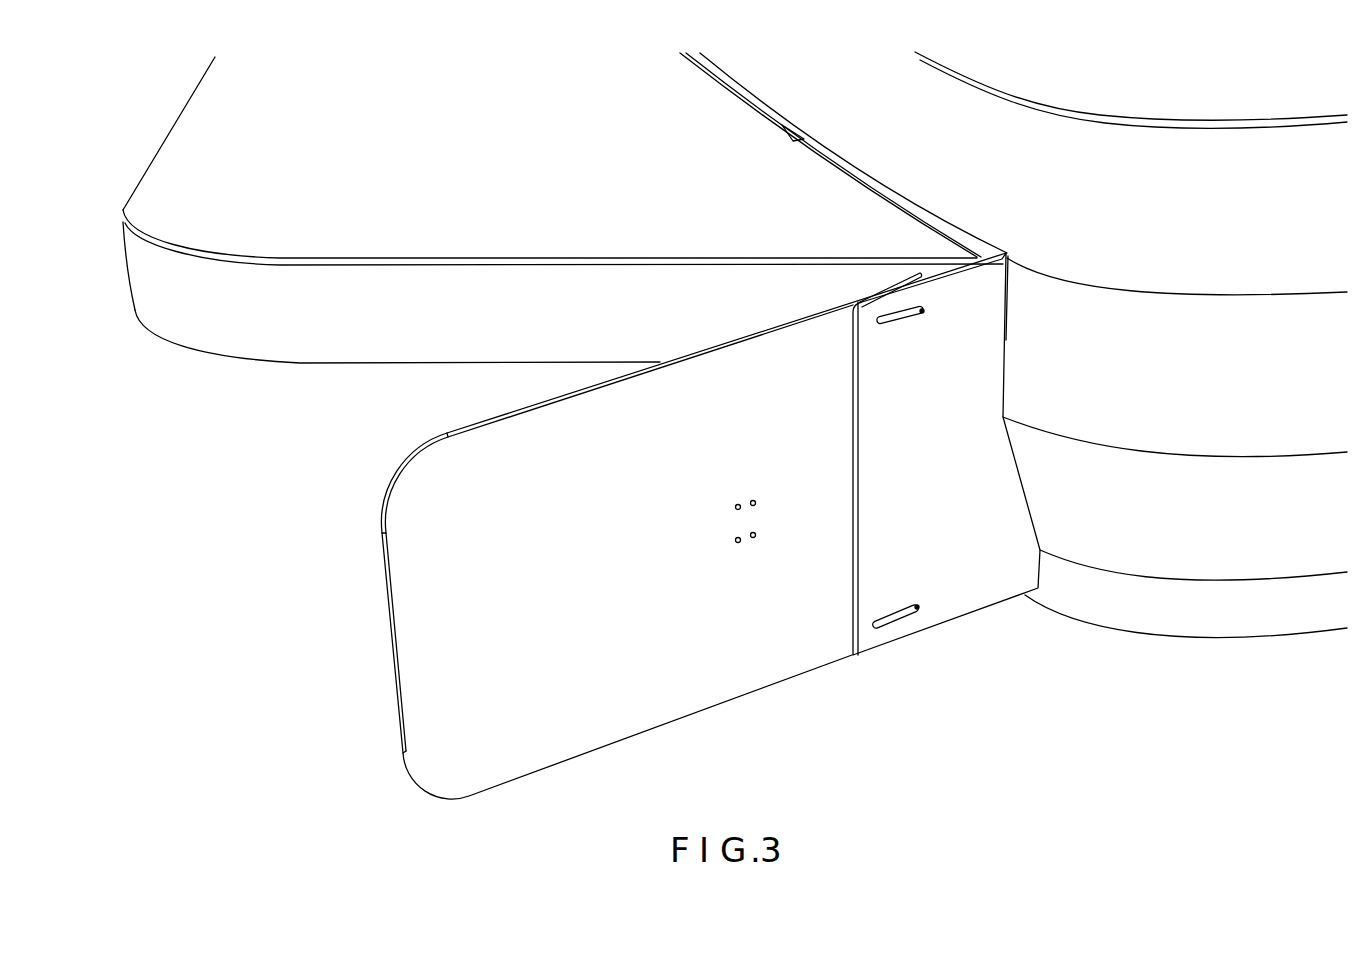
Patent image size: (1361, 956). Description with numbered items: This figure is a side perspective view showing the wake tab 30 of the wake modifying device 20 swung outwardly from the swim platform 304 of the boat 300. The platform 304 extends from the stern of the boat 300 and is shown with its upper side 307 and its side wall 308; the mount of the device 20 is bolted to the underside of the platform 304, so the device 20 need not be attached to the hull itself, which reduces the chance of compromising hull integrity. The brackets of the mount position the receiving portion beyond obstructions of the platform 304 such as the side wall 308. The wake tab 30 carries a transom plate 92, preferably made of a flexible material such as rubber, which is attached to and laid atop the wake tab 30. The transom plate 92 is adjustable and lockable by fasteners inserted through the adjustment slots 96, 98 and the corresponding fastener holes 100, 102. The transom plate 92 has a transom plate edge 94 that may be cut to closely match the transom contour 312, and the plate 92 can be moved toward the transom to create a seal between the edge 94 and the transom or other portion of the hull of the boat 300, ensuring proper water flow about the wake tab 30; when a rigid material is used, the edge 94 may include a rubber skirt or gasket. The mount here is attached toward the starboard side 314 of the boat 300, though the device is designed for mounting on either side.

The wake modifying device 20 is at (833, 703).
The wake tab 30 is at (588, 579).
The transom plate 92 is at (938, 487).
The transom plate edge 94 is at (1003, 371).
The adjustment slot 96 is at (884, 327).
The adjustment slot 98 is at (890, 618).
The fastener hole 100 is at (922, 311).
The fastener hole 102 is at (917, 607).
The boat 300 is at (1082, 85).
The platform 304 is at (193, 95).
The upper side 307 is at (548, 171).
The side wall 308 is at (543, 333).
The transom contour 312 is at (1098, 509).
The starboard side 314 is at (1330, 393).